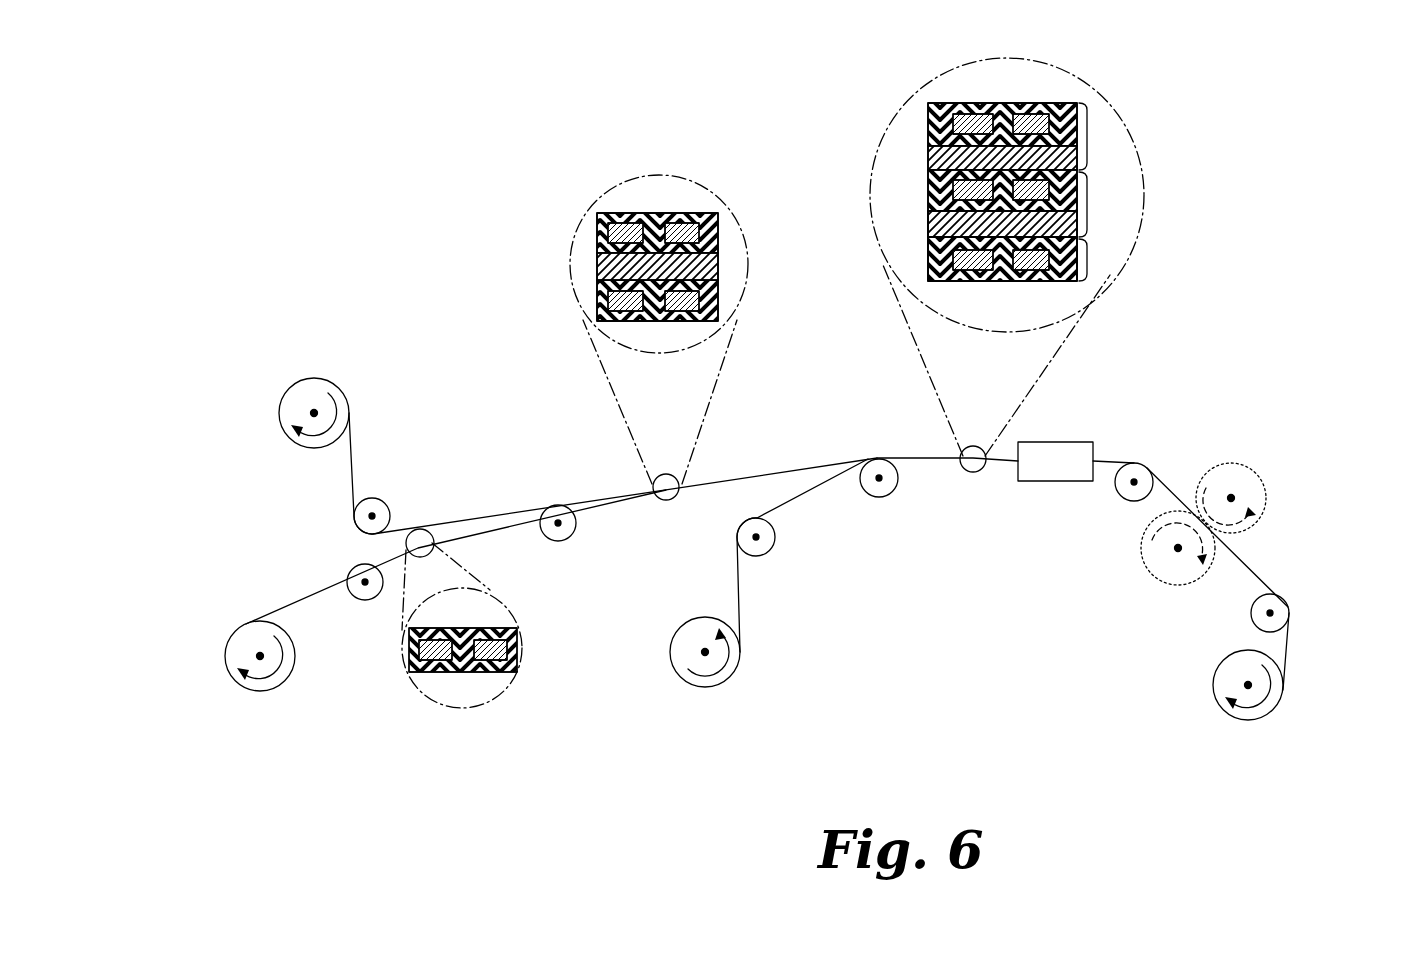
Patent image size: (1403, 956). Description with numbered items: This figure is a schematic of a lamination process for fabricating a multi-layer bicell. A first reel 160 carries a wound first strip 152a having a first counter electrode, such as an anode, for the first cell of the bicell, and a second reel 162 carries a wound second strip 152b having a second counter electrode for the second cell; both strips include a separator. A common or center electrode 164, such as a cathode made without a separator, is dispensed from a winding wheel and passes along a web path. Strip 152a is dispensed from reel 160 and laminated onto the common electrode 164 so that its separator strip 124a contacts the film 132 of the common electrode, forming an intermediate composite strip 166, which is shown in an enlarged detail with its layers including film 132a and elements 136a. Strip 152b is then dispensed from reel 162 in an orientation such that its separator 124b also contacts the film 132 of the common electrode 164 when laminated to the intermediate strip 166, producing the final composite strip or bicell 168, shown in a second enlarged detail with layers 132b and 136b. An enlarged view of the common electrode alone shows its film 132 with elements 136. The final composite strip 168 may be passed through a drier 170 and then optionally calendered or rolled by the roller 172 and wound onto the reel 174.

The first reel 160 is at (283, 400).
The reel 162 is at (740, 666).
The common electrode 164 is at (258, 692).
The intermediate composite strip 166 is at (598, 188).
The bicell 168 is at (925, 86).
The drier 170 is at (1085, 481).
The roller 172 is at (1262, 463).
The reel 174 is at (1222, 707).
The first strip 152a is at (352, 452).
The second strip 152b is at (738, 580).
The separator strip 124a is at (718, 268).
The separator 124b is at (931, 228).
The first stabilizing layer 132a is at (700, 213).
The second stabilizing layer 132b is at (939, 268).
The first patterned elements 136a is at (700, 232).
The second patterned elements 136b is at (981, 265).
The film 132 is at (517, 630).
The patterned elements 136 is at (518, 647).